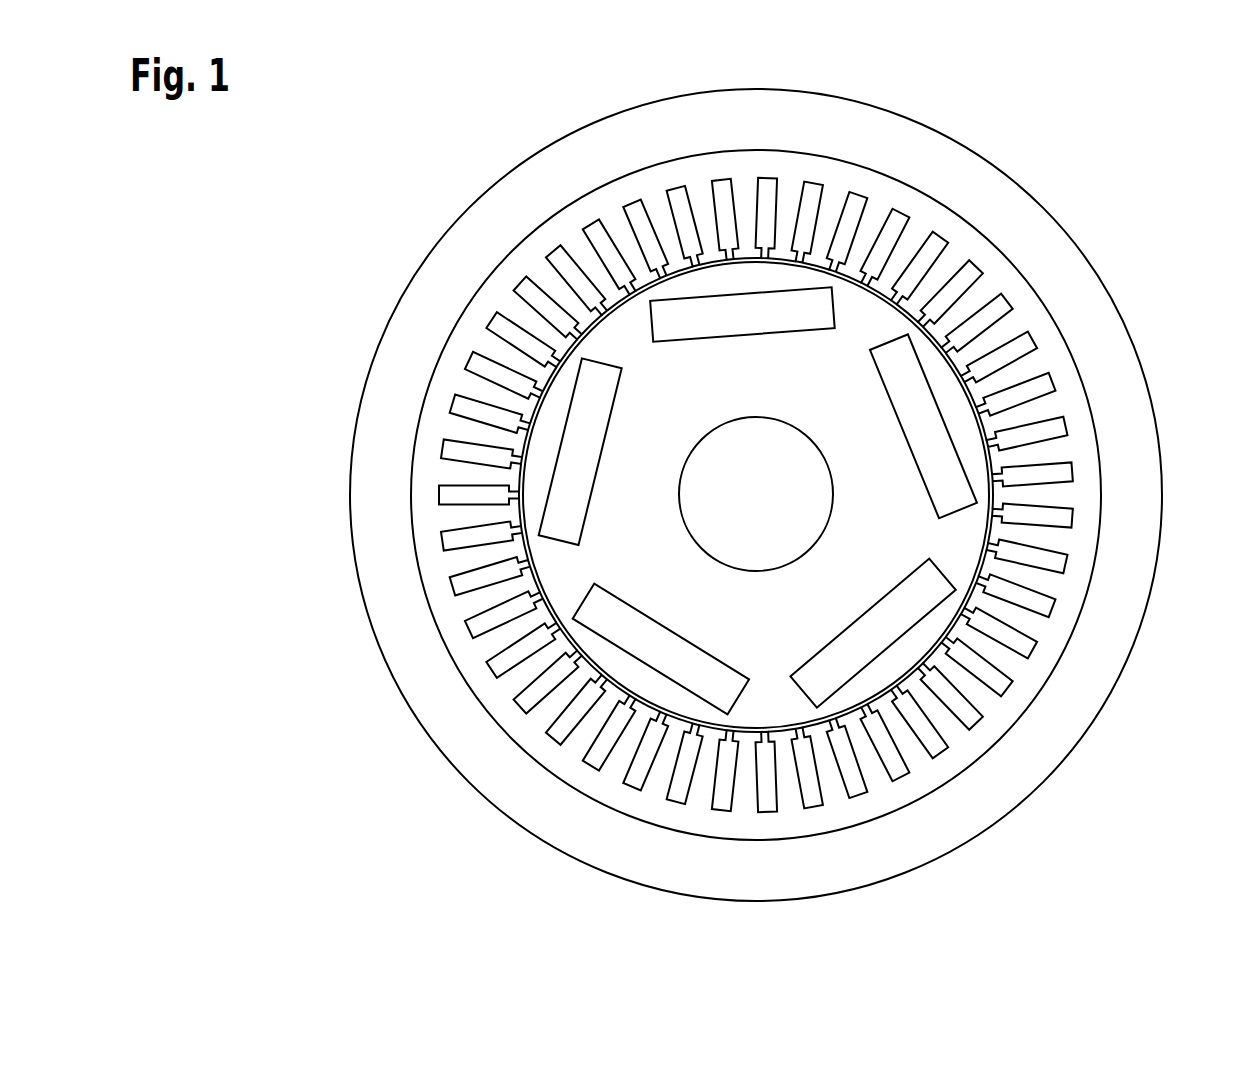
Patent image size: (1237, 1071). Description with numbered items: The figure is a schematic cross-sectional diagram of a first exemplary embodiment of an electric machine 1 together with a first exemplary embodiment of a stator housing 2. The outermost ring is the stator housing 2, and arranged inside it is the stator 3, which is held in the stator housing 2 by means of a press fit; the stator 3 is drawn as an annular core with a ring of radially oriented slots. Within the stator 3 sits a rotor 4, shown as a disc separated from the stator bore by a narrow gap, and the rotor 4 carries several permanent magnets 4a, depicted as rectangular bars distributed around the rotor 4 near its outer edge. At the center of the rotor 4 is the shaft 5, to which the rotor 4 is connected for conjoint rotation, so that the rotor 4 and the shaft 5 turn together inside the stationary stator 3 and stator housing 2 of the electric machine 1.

The electric machine 1 is at (781, 534).
The stator housing 2 is at (1090, 298).
The stator 3 is at (1070, 400).
The rotor 4 is at (867, 621).
The permanent magnets 4a is at (908, 607).
The shaft 5 is at (800, 512).